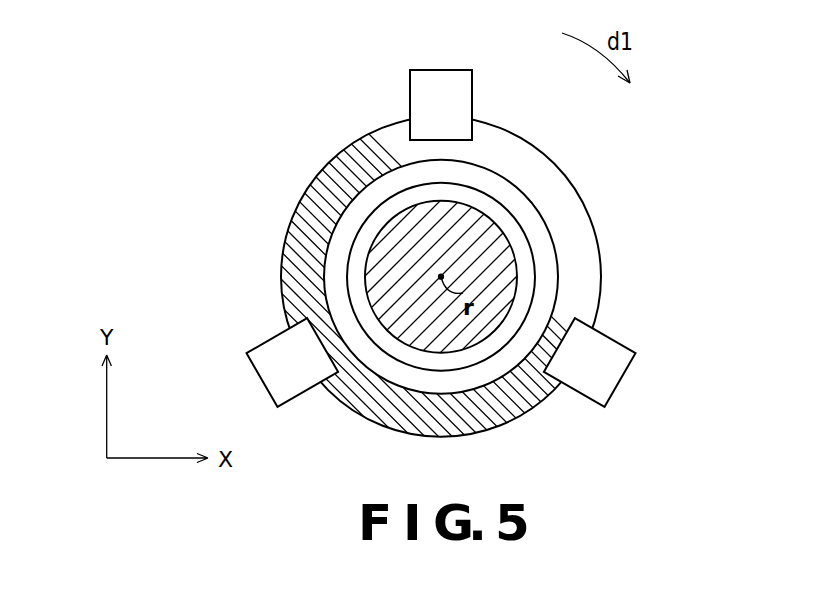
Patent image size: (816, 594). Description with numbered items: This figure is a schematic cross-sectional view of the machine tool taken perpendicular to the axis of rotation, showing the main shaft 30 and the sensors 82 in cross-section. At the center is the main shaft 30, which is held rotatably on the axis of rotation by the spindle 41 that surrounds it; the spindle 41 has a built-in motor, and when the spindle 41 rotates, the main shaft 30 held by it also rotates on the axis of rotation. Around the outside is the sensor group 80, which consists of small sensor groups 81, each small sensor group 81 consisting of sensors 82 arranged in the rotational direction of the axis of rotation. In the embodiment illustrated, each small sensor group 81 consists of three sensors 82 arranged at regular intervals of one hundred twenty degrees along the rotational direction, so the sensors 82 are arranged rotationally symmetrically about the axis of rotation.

The sensor group 80 is at (343, 250).
The small sensor group 81 is at (343, 277).
The sensor 82 is at (395, 82).
The spindle 41 is at (508, 228).
The main shaft 30 is at (453, 251).